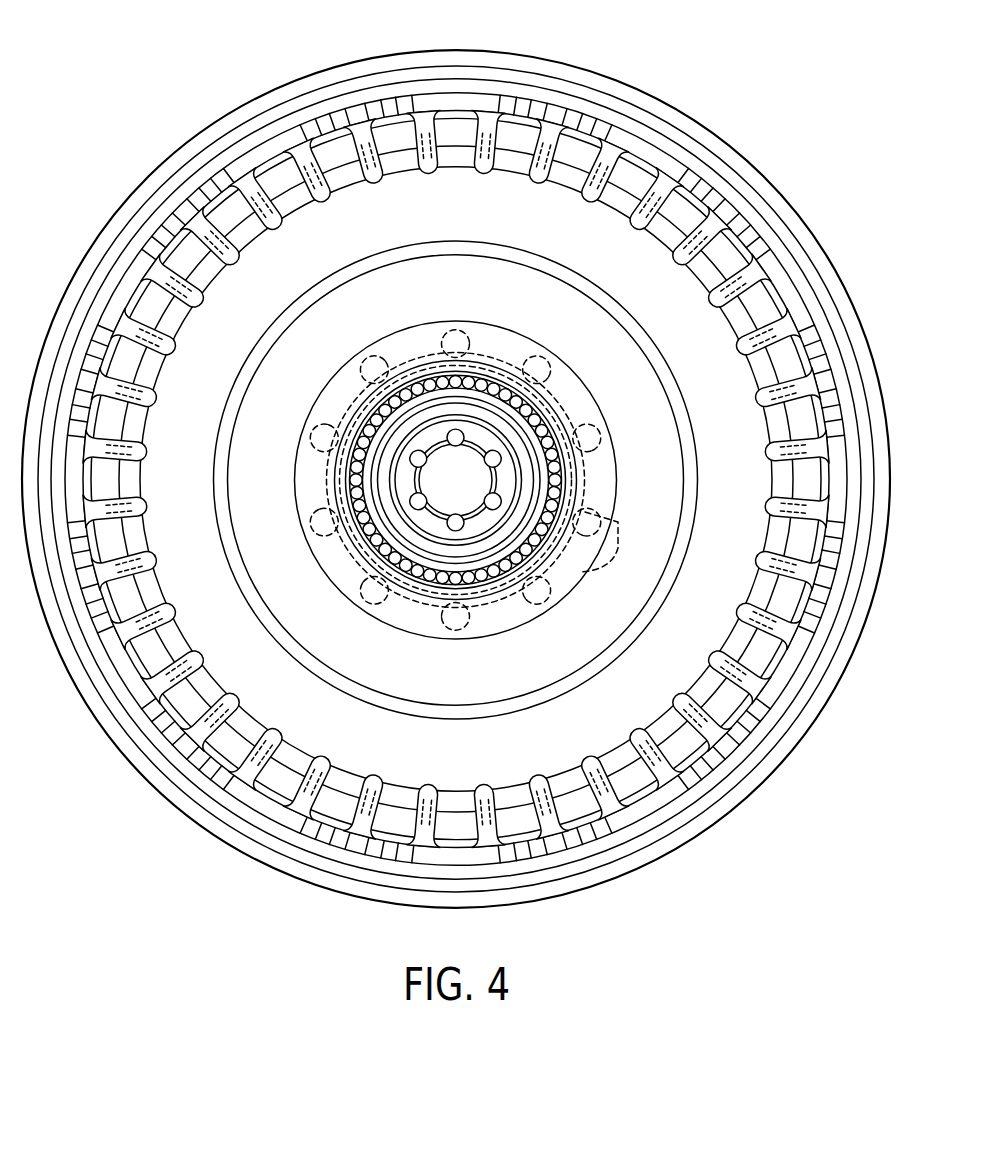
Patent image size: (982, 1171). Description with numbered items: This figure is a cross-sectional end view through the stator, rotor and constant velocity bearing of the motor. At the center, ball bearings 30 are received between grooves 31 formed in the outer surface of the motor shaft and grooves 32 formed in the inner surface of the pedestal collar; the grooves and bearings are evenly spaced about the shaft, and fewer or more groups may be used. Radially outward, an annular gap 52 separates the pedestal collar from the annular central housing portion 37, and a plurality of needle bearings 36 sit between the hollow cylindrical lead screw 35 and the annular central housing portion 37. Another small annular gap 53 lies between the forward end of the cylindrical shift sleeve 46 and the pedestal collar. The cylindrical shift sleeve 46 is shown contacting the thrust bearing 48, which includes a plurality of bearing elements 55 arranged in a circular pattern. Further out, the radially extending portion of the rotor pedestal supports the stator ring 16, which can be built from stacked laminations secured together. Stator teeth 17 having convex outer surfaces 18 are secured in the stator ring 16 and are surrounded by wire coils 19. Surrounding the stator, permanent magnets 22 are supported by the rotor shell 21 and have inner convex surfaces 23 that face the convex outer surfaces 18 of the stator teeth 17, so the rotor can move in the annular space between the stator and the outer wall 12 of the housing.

The outer wall 12 is at (810, 264).
The stator ring 16 is at (474, 213).
The stator teeth 17 is at (584, 182).
The convex outer surfaces 18 is at (535, 110).
The wire coils 19 is at (489, 112).
The rotor shell 21 is at (742, 206).
The permanent magnets 22 is at (658, 148).
The inner convex surfaces 23 is at (670, 224).
The ball bearings 30 is at (457, 434).
The grooves 31 is at (466, 510).
The grooves 32 is at (413, 521).
The hollow cylindrical lead screw 35 is at (572, 430).
The needle bearings 36 is at (450, 392).
The annular central housing portion 37 is at (484, 438).
The cylindrical shift sleeve 46 is at (608, 497).
The thrust bearing 48 is at (470, 628).
The annular gap 52 is at (405, 445).
The annular gap 53 is at (591, 462).
The bearing elements 55 is at (600, 555).